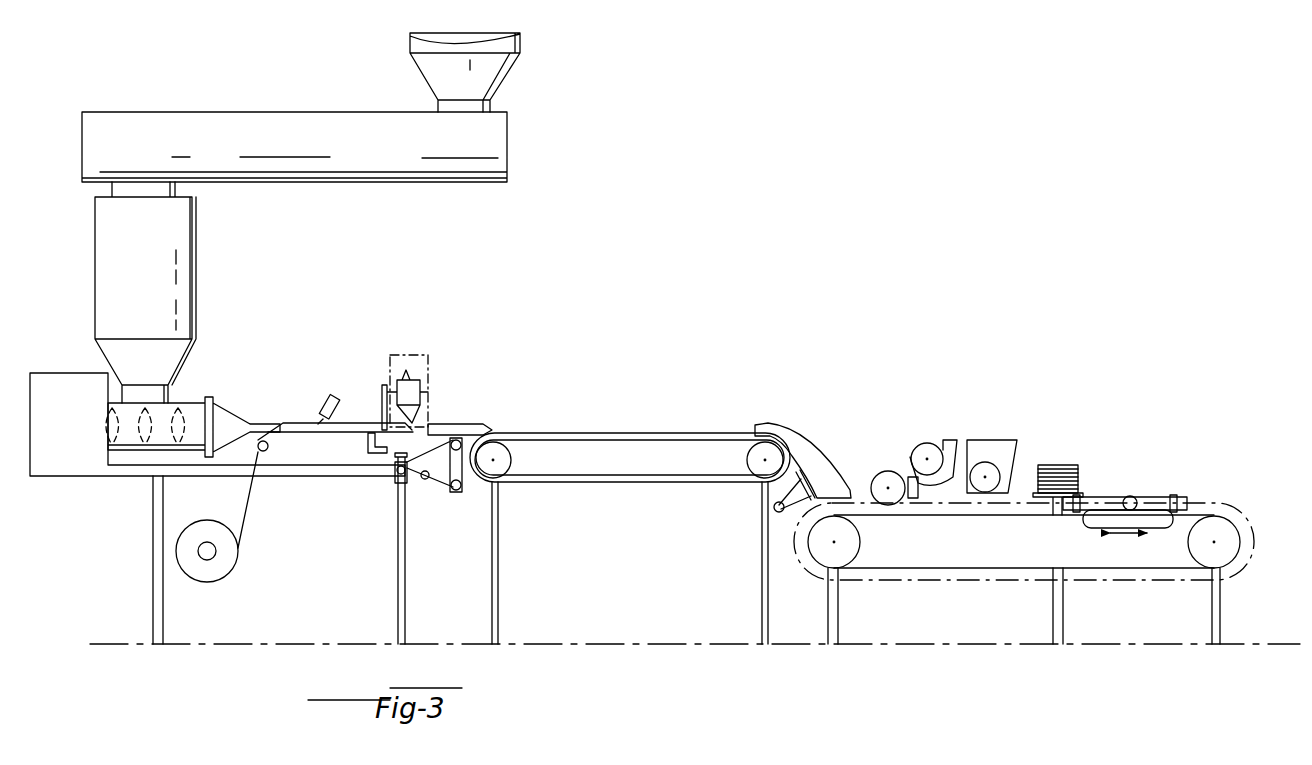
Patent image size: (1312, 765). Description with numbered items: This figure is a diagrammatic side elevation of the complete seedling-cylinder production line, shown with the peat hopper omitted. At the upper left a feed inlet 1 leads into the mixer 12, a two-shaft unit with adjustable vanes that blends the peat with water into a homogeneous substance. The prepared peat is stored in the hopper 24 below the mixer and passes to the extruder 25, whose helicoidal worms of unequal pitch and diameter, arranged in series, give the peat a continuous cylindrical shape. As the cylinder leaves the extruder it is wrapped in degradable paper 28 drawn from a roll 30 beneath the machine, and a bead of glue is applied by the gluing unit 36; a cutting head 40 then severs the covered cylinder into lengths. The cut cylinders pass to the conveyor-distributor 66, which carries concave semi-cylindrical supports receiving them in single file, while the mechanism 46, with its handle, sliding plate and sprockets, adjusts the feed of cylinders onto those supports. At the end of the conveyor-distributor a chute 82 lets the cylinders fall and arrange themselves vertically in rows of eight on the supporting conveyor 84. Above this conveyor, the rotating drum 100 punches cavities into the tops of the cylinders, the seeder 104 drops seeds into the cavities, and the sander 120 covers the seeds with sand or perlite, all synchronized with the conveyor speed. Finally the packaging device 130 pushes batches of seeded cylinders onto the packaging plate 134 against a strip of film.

The feed hopper 1 is at (503, 65).
The mixer 12 is at (432, 185).
The hopper 24 is at (197, 248).
The extruder 25 is at (143, 442).
The paper 28 is at (247, 528).
The roll 30 is at (220, 572).
The gluing unit 36 is at (332, 398).
The spindle assembly 40 is at (423, 373).
The mechanism 46 is at (446, 502).
The conveyor-distributor 66 is at (640, 430).
The chute 82 is at (797, 425).
The supporting conveyor 84 is at (937, 568).
The rotating drum 100 is at (877, 470).
The seeder 104 is at (930, 441).
The sander 120 is at (1013, 440).
The device 130 is at (1148, 482).
The packaging plate 134 is at (1052, 465).